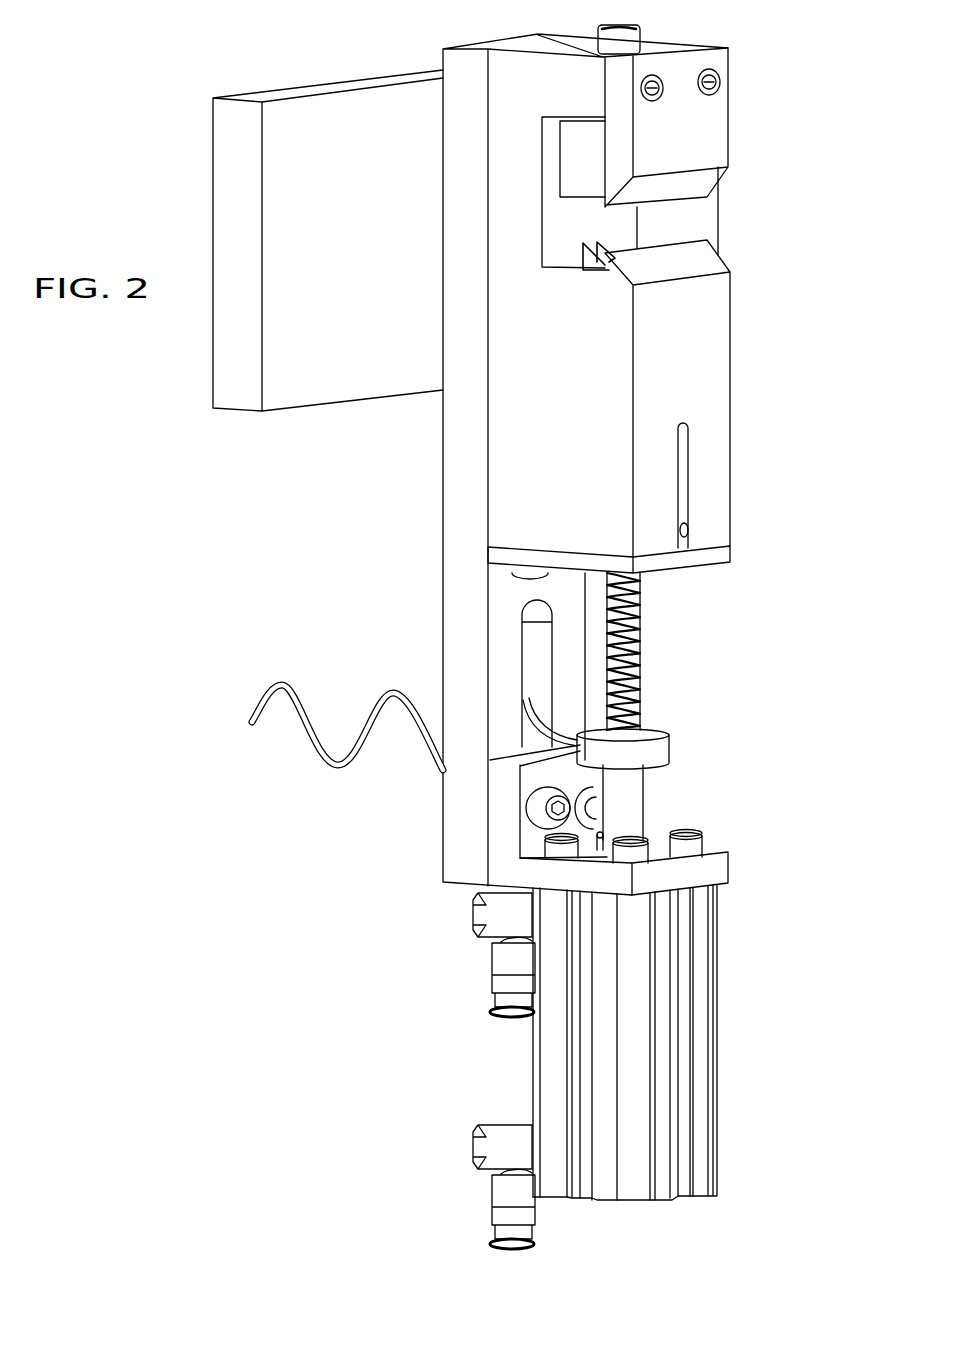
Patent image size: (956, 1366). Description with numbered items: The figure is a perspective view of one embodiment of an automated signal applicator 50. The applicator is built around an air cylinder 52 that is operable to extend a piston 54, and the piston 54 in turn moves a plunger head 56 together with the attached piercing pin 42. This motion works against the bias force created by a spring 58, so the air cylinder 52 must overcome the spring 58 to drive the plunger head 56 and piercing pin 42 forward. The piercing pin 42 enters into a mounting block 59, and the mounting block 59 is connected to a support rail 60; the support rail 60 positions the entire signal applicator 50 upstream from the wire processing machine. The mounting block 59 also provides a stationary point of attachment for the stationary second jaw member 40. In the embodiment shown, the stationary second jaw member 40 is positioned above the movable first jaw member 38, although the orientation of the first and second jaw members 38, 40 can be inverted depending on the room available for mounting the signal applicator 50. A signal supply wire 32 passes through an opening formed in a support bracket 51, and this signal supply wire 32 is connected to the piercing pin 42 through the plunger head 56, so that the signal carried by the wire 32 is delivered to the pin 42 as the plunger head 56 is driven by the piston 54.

The signal supply wire 32 is at (282, 683).
The movable first jaw member 38 is at (592, 262).
The stationary second jaw member 40 is at (578, 157).
The piercing pin 42 is at (635, 591).
The automated signal applicator 50 is at (786, 512).
The support bracket 51 is at (465, 553).
The air cylinder 52 is at (718, 1042).
The piston 54 is at (643, 802).
The plunger head 56 is at (673, 745).
The spring 58 is at (642, 633).
The mounting block 59 is at (713, 345).
The support rail 60 is at (355, 102).